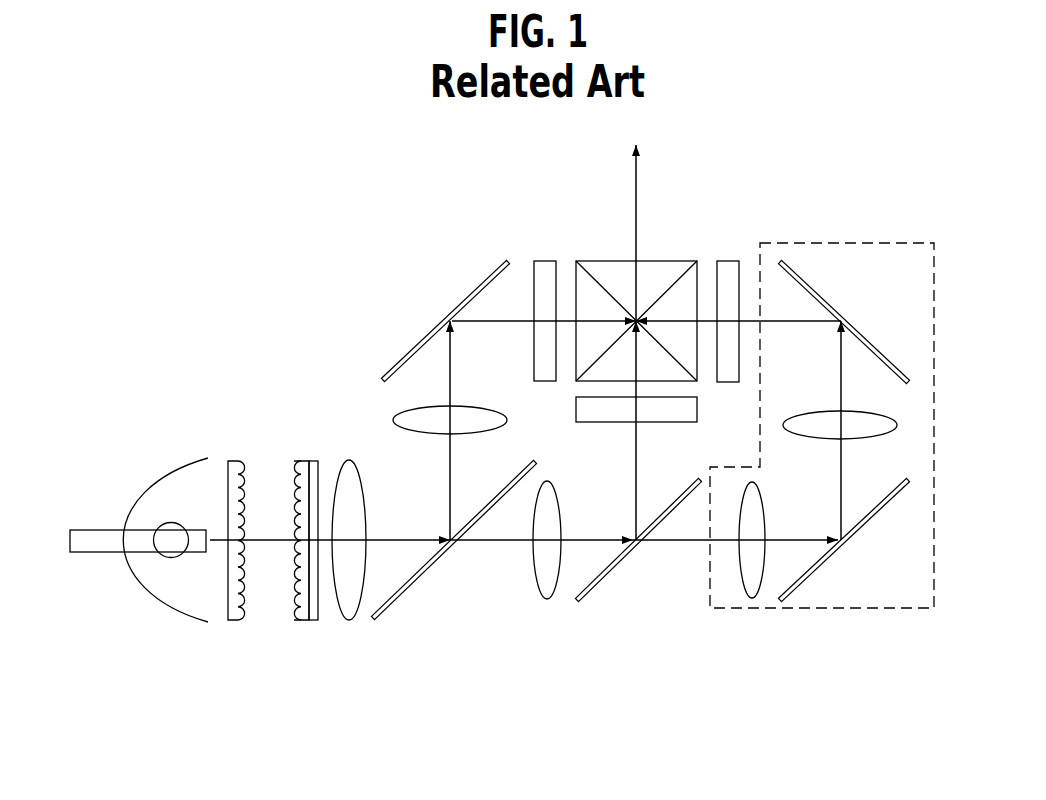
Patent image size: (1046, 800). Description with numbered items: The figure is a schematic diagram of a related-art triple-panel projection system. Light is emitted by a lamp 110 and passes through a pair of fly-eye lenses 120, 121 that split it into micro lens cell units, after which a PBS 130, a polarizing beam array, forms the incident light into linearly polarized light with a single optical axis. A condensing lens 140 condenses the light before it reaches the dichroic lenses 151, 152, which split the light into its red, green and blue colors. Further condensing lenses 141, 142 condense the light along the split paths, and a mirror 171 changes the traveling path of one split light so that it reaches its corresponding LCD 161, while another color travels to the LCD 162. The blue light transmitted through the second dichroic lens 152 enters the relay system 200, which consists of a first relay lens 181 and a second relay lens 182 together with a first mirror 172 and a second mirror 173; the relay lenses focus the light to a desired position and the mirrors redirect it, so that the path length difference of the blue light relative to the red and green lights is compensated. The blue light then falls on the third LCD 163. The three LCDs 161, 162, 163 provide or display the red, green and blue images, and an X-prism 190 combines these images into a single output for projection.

The lamp 110 is at (143, 586).
The fly-eye lens 120 is at (237, 462).
The fly-eye lens 121 is at (300, 462).
The PBS (Polarizing Beam Array) 130 is at (316, 466).
The condensing lens 140 is at (347, 596).
The condensing lens 141 is at (431, 419).
The condensing lens 142 is at (550, 582).
The dichroic lens 151 is at (411, 581).
The second dichroic lens 152 is at (615, 565).
The LCD (Liquid Crystal Display) 161 is at (548, 270).
The LCD (Liquid Crystal Display) 162 is at (600, 410).
The third LCD 163 is at (733, 370).
The mirror 171 is at (480, 284).
The first mirror 172 is at (865, 525).
The second mirror 173 is at (879, 355).
The first relay lens 181 is at (752, 516).
The second relay lens 182 is at (868, 428).
The X-prism 190 is at (664, 262).
The relay system 200 is at (885, 608).